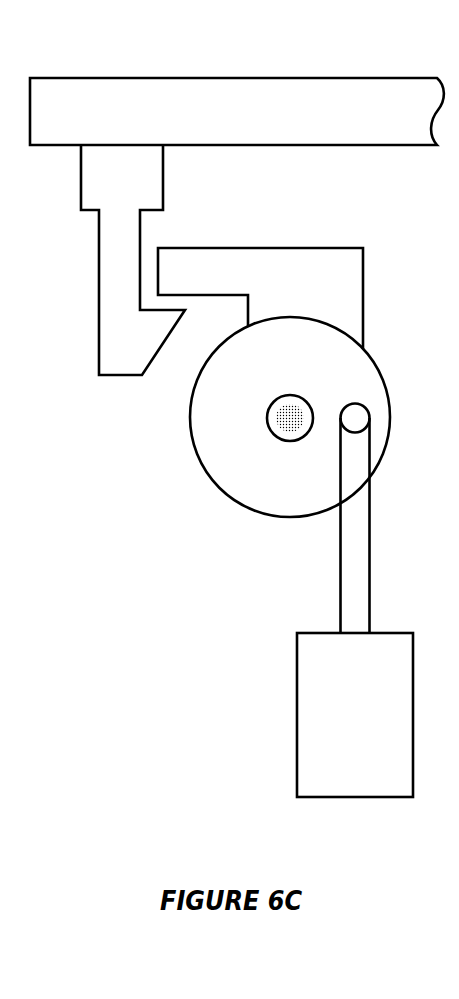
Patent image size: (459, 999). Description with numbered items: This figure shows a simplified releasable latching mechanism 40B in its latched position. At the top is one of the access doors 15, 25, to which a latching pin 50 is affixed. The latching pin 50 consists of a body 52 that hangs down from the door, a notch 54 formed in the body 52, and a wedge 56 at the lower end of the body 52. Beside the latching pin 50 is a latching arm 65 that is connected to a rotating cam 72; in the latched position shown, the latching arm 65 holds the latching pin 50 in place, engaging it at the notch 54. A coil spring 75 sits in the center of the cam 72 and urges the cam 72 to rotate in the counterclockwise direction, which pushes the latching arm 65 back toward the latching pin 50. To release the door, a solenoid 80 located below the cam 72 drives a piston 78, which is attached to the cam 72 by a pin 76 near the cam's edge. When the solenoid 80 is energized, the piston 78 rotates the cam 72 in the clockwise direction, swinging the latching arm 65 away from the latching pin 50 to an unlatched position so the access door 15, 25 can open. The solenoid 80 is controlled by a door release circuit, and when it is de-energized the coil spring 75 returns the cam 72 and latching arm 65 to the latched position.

The access door 15 is at (237, 90).
The access door 25 is at (273, 78).
The releasable latching mechanism 40B is at (256, 504).
The latching pin 50 is at (108, 260).
The body 52 is at (108, 260).
The notch 54 is at (146, 260).
The wedge 56 is at (162, 344).
The latching arm 65 is at (266, 248).
The rotating cam 72 is at (207, 423).
The coil spring 75 is at (290, 425).
The pin 76 is at (358, 420).
The piston 78 is at (362, 527).
The solenoid 80 is at (318, 687).